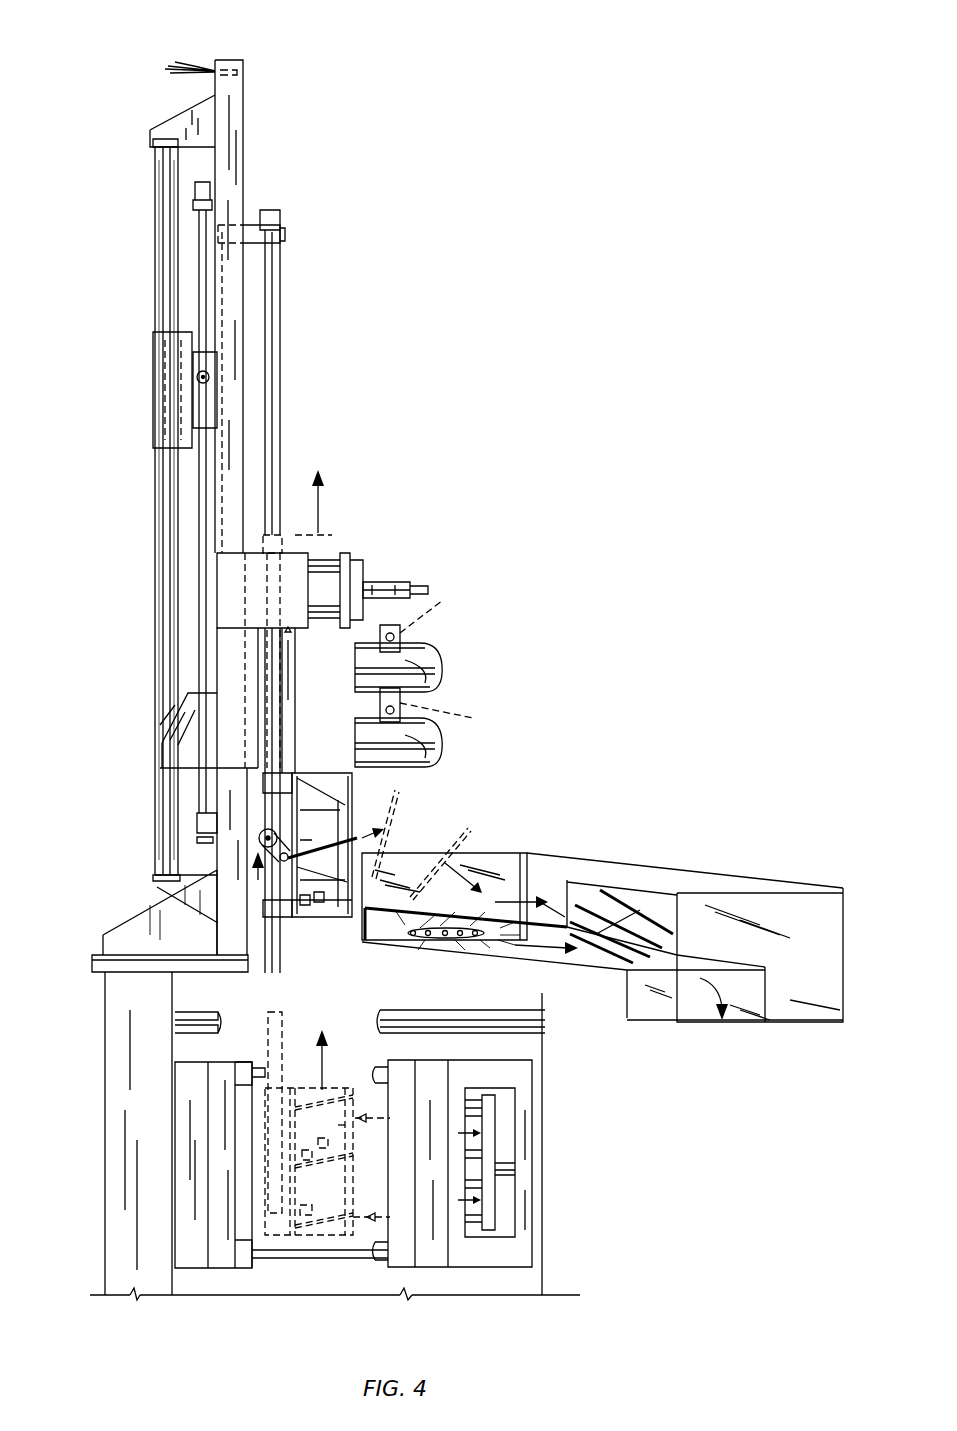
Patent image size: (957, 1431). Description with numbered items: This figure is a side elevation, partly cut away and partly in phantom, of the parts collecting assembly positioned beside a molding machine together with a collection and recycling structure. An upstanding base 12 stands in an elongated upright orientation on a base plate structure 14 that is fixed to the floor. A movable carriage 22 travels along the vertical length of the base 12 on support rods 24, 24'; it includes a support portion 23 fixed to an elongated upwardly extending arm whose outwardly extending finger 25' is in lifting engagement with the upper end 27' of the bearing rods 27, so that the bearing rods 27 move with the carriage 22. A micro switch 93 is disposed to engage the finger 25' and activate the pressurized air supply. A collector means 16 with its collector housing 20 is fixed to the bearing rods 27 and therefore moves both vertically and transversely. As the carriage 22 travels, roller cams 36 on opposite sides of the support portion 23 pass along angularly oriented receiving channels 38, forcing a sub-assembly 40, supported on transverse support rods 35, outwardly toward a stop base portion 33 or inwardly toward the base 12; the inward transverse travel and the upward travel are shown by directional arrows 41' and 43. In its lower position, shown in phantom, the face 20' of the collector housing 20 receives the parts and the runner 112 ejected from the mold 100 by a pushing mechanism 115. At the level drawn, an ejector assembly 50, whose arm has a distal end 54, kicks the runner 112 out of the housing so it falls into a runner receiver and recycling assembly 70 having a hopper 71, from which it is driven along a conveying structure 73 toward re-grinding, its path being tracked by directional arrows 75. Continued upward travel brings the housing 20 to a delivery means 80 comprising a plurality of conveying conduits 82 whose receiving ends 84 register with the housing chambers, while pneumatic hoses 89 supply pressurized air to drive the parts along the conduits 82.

The upstanding base 12 is at (228, 60).
The micro switch 93 is at (196, 58).
The movable carriage 22 is at (138, 398).
The support rod 24 is at (145, 510).
The support rod 24' is at (156, 512).
The support portion 23 is at (198, 436).
The roller cam 36 is at (198, 374).
The finger 25' is at (267, 200).
The upper end of bearing rods 27' is at (301, 205).
The bearing rods 27 is at (276, 721).
The directional arrow 43 is at (322, 515).
The transverse support rods 35 is at (330, 555).
The stop base portion 33 is at (365, 572).
The delivery means 80 is at (420, 673).
The conveying conduits 82 is at (420, 645).
The receiving end of conduit 84 is at (358, 663).
The pneumatic hoses 89 is at (443, 600).
The receiving channels 38 is at (160, 713).
The sub-assembly 40 is at (160, 755).
The collector means 16 is at (295, 767).
The collector housing 20 is at (311, 1001).
The face of collector housing 20' is at (322, 929).
The ejector assembly 50 is at (258, 880).
The distal end of ejector arm 54 is at (357, 830).
The runner 112 is at (400, 796).
The runner receiver and recycling assembly 70 is at (602, 927).
The hopper 71 is at (372, 945).
The conveying structure 73 is at (713, 875).
The directional arrows 75 is at (542, 955).
The base plate structure 14 is at (92, 958).
The directional arrow 41' is at (364, 1124).
The mold 100 is at (222, 1270).
The pushing mechanism 115 is at (500, 1152).